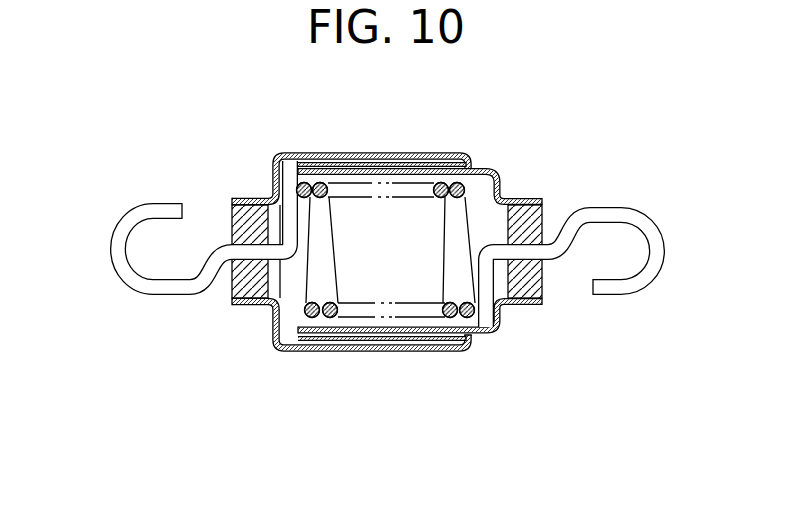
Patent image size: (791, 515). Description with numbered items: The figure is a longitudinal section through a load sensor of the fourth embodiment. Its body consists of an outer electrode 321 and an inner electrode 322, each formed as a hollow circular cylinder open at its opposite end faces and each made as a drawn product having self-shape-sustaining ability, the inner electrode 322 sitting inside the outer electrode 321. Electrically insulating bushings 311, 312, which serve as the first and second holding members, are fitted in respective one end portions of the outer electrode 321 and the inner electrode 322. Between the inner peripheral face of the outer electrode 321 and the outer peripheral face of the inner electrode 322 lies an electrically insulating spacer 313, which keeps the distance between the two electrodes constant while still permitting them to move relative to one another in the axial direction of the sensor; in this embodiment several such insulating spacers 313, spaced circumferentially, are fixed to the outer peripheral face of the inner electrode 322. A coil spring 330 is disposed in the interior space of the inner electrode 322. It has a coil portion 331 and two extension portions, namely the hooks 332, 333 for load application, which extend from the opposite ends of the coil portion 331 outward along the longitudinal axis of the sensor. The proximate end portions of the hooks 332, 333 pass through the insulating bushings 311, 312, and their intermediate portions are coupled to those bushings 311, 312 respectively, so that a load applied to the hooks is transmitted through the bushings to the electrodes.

The insulating bushing 311 is at (242, 282).
The insulating bushing 312 is at (543, 284).
The insulating spacer 313 is at (422, 160).
The outer electrode 321 is at (320, 152).
The inner electrode 322 is at (372, 160).
The coil spring 330 is at (484, 224).
The coil portion 331 is at (305, 187).
The hook 332 is at (127, 223).
The hook 333 is at (641, 223).